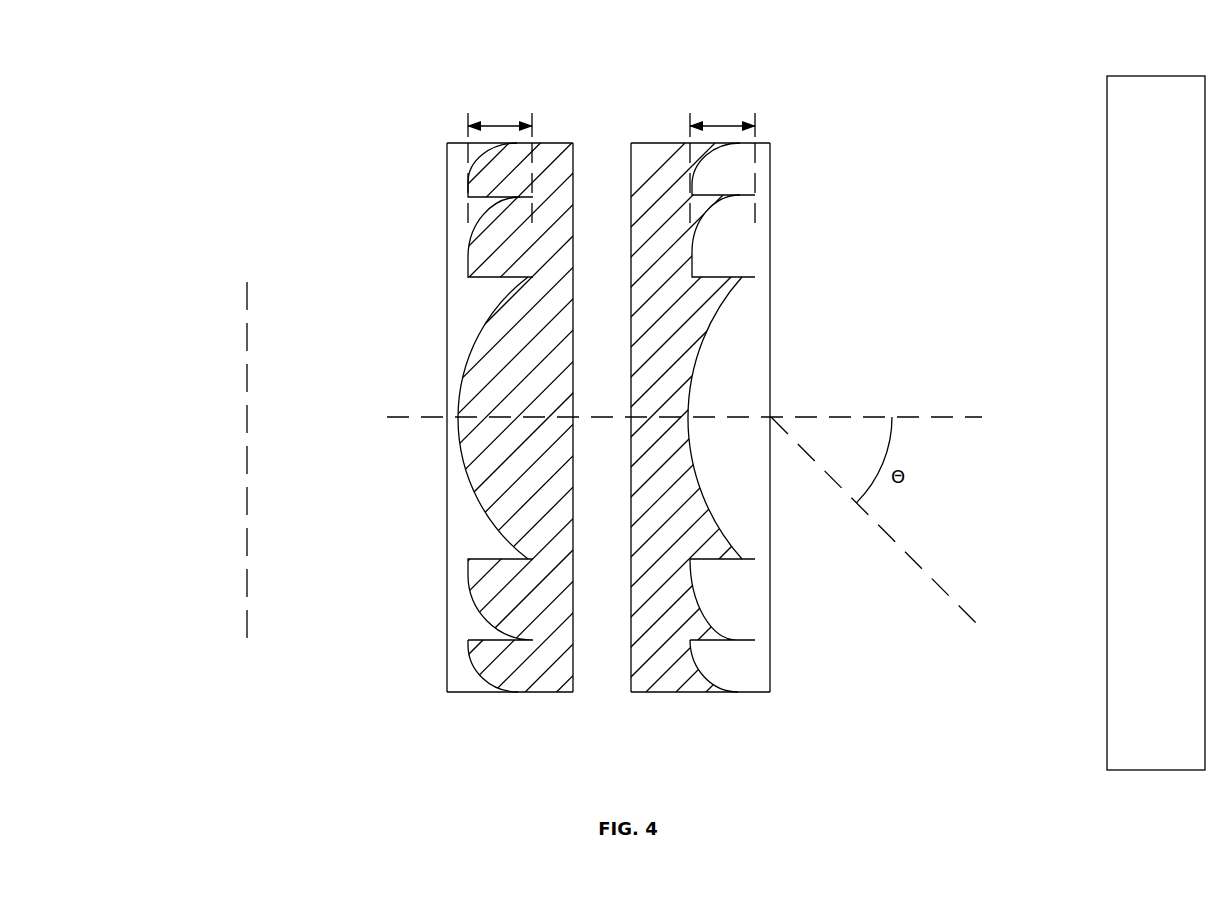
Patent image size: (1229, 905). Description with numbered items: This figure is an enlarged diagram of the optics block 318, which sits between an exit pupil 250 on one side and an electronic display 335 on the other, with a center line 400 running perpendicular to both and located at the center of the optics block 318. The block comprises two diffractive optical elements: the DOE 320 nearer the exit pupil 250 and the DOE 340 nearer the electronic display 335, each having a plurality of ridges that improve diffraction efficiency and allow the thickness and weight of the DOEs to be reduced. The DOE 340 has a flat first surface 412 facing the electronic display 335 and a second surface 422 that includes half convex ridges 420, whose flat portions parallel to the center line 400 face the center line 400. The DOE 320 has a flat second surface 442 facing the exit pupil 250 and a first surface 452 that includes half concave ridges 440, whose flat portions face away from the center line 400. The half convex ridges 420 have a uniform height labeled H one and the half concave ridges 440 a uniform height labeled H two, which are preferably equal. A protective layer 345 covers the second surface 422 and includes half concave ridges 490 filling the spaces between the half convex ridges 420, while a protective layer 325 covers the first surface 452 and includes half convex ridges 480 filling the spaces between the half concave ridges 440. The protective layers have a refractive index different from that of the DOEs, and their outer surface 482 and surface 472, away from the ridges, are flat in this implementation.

The optics block 318 is at (417, 115).
The DOE 320 is at (472, 293).
The protective layer 325 is at (548, 170).
The DOE 340 is at (753, 253).
The protective layer 345 is at (660, 180).
The surface 472 is at (572, 302).
The surface 482 is at (637, 272).
The first surface 452 is at (468, 427).
The second surface 422 is at (683, 447).
The second surface 442 is at (447, 455).
The first surface 412 is at (773, 518).
The center line 400 is at (950, 412).
The exit pupil 250 is at (243, 472).
The electronic display 335 is at (1140, 455).
The half concave ridges 440 is at (482, 686).
The half convex ridges 480 is at (498, 660).
The half concave ridges 490 is at (705, 684).
The half convex ridges 420 is at (727, 660).